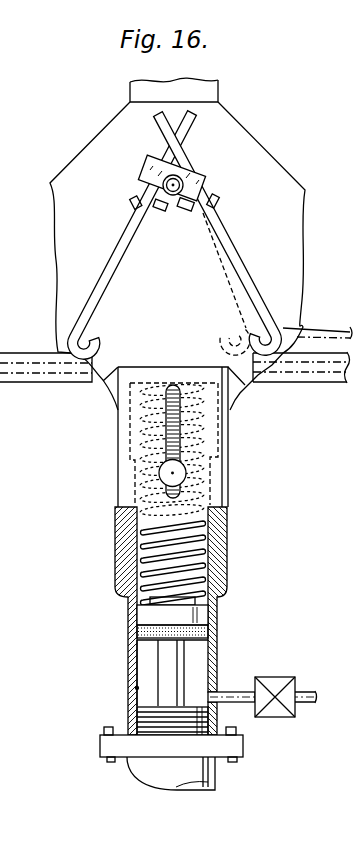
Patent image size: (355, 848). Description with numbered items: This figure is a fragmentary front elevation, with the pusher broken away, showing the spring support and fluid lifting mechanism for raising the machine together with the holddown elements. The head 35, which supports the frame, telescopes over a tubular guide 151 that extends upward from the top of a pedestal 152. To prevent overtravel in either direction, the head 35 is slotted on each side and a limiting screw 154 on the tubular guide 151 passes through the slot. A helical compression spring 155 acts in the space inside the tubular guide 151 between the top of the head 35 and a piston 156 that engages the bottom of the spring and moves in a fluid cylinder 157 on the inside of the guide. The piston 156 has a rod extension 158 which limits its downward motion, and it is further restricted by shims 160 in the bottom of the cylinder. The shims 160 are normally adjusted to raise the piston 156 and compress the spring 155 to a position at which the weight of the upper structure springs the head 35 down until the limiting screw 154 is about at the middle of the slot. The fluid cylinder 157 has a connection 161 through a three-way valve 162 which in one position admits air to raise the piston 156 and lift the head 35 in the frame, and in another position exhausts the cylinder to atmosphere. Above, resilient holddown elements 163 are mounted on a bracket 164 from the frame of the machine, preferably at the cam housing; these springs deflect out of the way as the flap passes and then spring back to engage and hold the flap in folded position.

The head 35 is at (229, 480).
The tubular guide 151 is at (131, 655).
The pedestal 152 is at (150, 768).
The limiting screw 154 is at (158, 477).
The helical compression spring 155 is at (143, 530).
The piston 156 is at (147, 613).
The fluid cylinder 157 is at (135, 688).
The rod extension 158 is at (186, 666).
The shims 160 is at (136, 718).
The connection 161 is at (229, 694).
The three-way valve 162 is at (276, 686).
The resilient holddown elements 163 is at (258, 287).
The bracket 164 is at (200, 181).